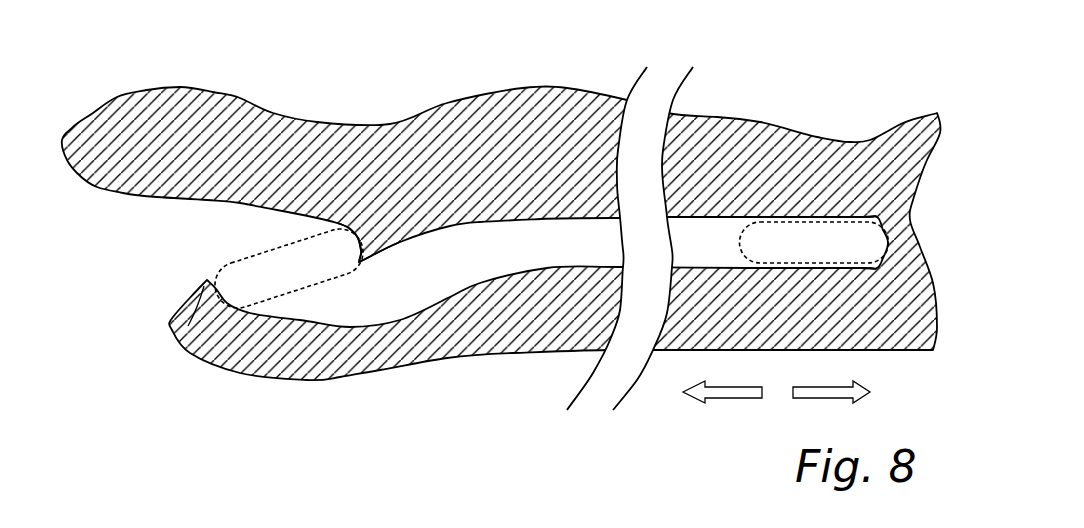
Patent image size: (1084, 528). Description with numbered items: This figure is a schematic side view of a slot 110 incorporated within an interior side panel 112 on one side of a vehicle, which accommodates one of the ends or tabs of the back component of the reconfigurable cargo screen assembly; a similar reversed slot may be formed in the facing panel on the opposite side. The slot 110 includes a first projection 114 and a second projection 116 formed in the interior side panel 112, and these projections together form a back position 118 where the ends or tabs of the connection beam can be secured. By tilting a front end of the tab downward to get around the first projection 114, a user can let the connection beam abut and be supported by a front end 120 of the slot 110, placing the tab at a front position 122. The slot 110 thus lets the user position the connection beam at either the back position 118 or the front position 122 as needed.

The slot 110 is at (500, 238).
The interior side panel 112 is at (140, 138).
The first projection 114 is at (360, 259).
The second projection 116 is at (173, 340).
The back position 118 is at (265, 267).
The front end 120 is at (883, 227).
The front position 122 is at (802, 247).